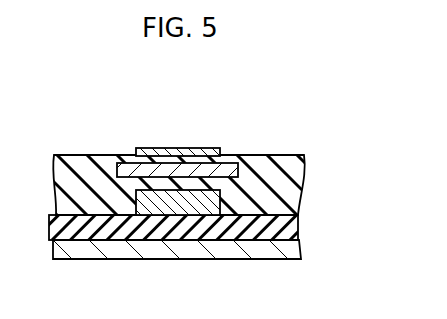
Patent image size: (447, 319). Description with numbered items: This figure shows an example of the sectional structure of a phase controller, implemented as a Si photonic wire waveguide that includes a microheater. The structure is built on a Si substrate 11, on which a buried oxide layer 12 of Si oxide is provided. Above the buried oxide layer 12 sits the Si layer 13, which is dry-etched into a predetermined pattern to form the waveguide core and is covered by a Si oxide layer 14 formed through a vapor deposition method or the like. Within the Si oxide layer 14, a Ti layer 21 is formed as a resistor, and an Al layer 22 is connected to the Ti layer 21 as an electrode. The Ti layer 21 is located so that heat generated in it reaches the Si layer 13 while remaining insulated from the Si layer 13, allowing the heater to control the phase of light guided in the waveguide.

The Si substrate 11 is at (283, 248).
The buried oxide layer 12 is at (283, 225).
The Si layer 13 is at (177, 203).
The Si oxide layer 14 is at (288, 183).
The Ti layer 21 is at (224, 160).
The Al layer 22 is at (182, 148).